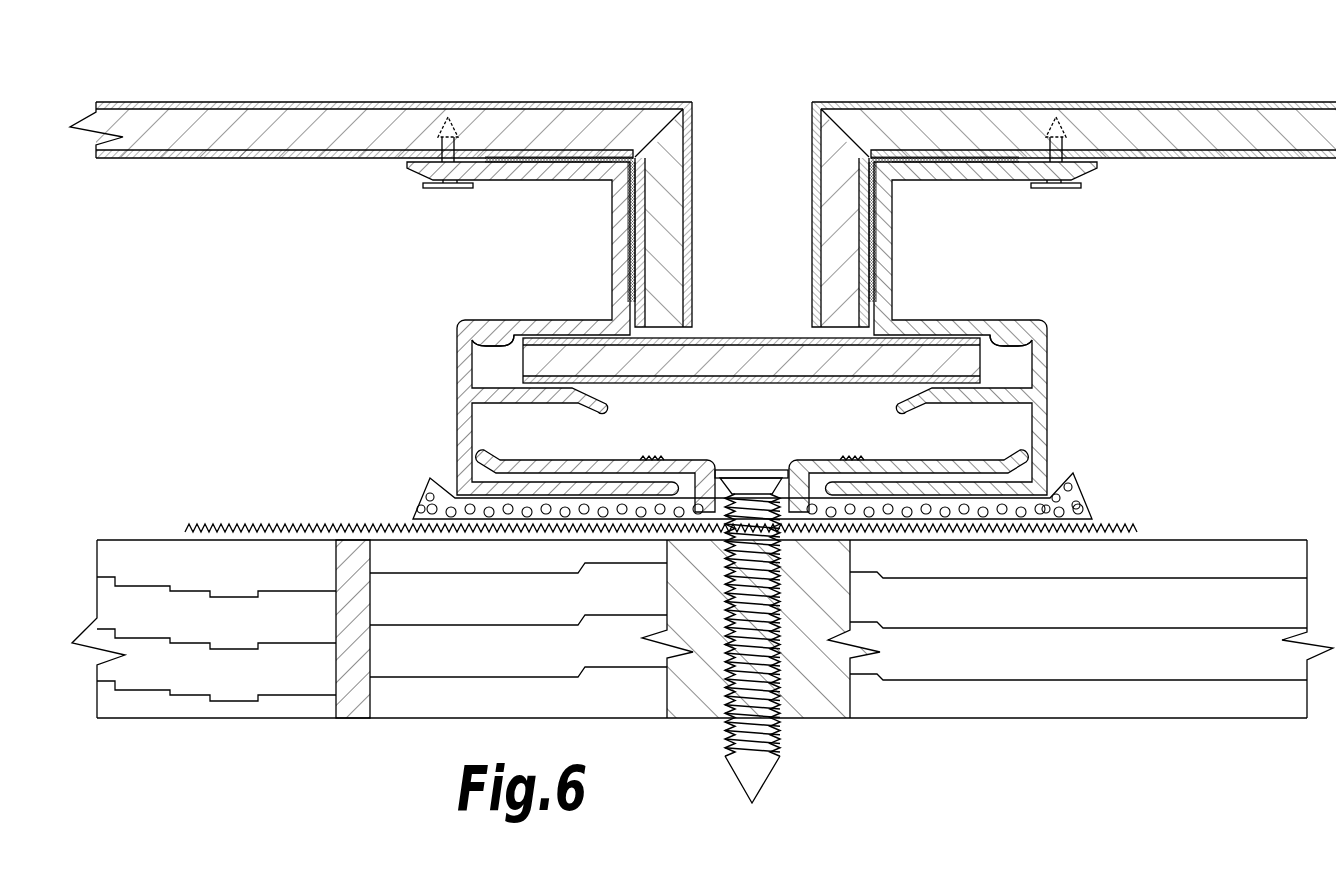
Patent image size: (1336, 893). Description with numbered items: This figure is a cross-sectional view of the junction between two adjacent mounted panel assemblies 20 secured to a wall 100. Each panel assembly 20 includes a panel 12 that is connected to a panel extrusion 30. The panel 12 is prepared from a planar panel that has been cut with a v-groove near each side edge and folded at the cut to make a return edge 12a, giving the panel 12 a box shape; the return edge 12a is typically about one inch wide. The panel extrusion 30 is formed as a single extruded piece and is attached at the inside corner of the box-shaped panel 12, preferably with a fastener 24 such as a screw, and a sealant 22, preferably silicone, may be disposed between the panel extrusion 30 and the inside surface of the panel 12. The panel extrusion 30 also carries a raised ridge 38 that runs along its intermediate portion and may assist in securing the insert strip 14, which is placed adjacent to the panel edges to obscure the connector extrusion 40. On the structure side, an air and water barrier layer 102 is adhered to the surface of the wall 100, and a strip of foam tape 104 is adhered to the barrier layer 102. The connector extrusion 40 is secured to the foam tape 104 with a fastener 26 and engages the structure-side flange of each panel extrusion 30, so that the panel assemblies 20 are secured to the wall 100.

The panel 12 is at (703, 172).
The return edge 12a is at (811, 171).
The insert strip 14 is at (752, 336).
The panel assembly 20 is at (367, 94).
The sealant 22 is at (880, 233).
The fastener 24 is at (438, 193).
The fastener 26 is at (752, 470).
The panel extrusion 30 is at (450, 397).
The raised ridge 38 is at (500, 344).
The connector extrusion 40 is at (662, 454).
The wall 100 is at (236, 690).
The air and water barrier layer 102 is at (1200, 522).
The strip of foam tape 104 is at (1083, 491).